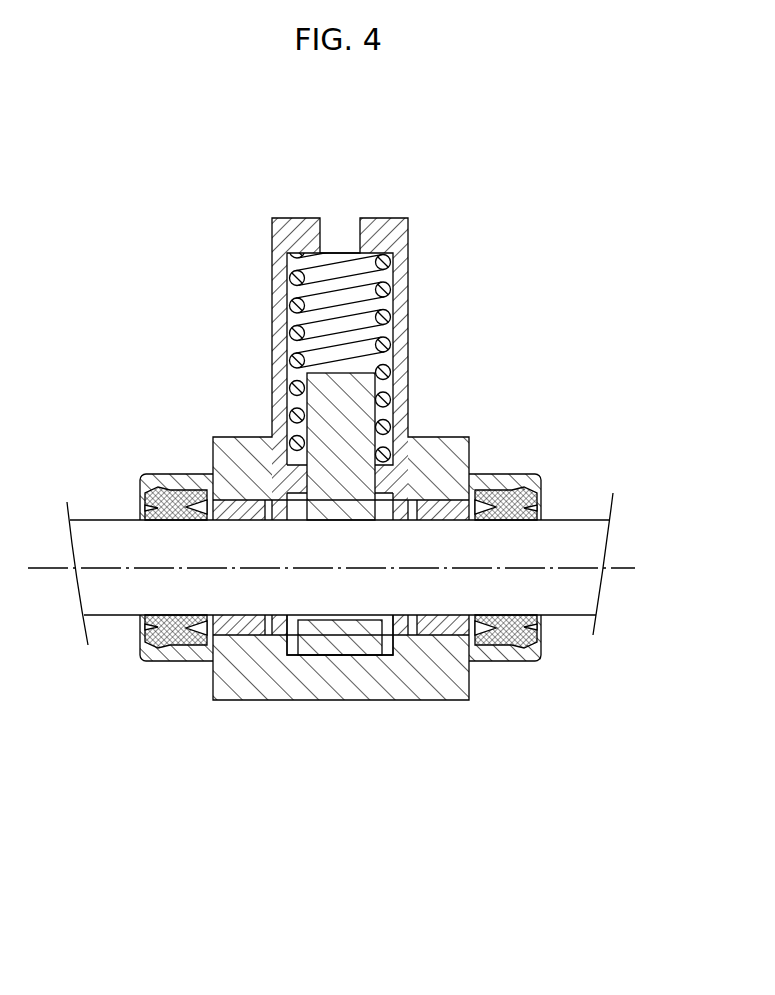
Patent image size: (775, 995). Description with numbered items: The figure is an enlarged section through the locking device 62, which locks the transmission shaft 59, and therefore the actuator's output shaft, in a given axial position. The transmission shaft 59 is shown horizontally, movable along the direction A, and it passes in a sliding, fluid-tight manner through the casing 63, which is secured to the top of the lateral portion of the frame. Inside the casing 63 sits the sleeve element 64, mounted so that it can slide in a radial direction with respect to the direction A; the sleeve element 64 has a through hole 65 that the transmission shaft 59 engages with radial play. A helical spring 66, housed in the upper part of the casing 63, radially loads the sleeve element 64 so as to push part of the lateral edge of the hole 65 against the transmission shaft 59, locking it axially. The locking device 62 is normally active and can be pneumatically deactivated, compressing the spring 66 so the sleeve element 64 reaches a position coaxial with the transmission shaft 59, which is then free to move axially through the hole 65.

The transmission shaft 59 is at (565, 535).
The locking device 62 is at (517, 695).
The casing 63 is at (428, 468).
The sleeve element 64 is at (318, 646).
The through hole 65 is at (329, 612).
The helical spring 66 is at (408, 278).
The direction A is at (622, 572).